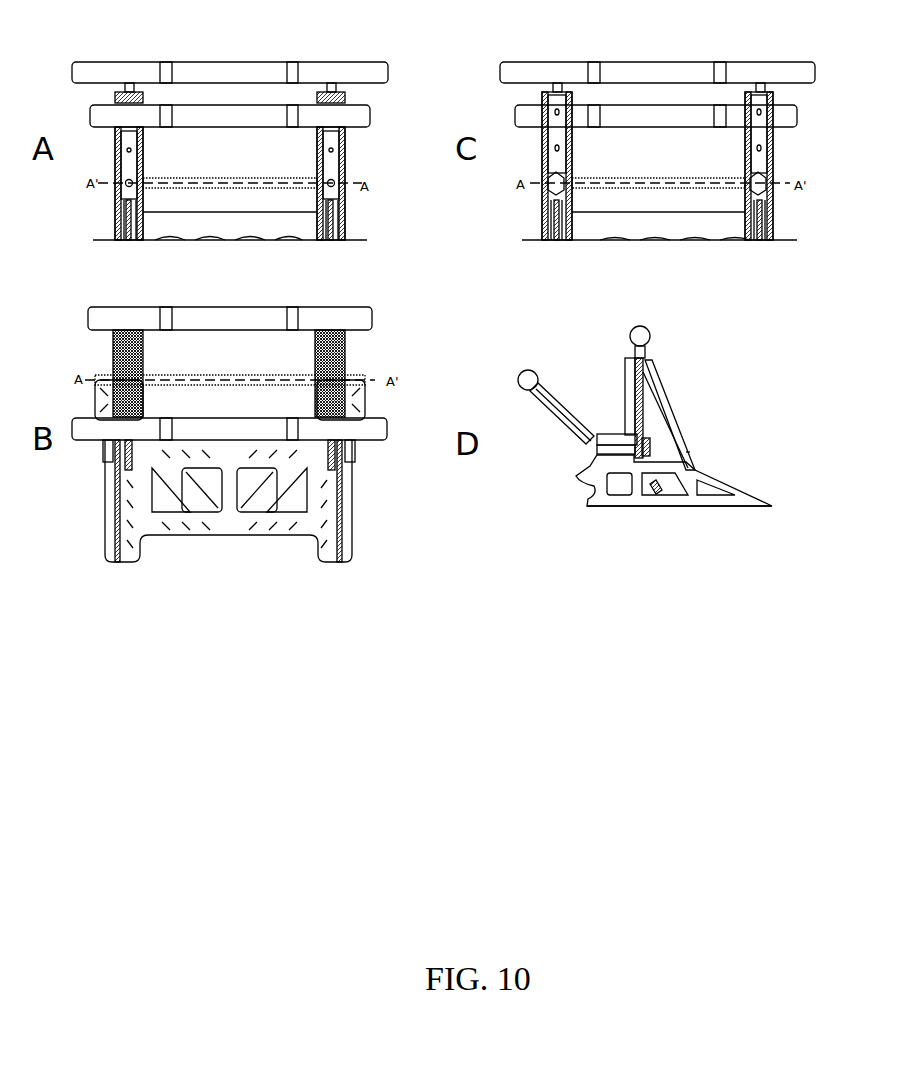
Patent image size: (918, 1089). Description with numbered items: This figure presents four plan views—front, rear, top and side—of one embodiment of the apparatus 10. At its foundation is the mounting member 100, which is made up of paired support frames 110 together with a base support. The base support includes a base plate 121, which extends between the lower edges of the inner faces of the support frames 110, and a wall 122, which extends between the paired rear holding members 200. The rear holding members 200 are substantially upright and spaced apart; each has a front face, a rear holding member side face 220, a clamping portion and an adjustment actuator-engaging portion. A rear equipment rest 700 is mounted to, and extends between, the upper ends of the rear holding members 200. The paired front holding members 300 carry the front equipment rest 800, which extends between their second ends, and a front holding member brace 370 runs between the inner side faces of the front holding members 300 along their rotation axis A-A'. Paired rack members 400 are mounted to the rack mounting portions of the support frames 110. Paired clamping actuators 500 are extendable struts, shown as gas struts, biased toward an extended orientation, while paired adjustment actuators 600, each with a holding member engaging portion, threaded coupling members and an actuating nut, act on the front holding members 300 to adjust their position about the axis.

The apparatus 10 is at (96, 54).
The rear equipment rest 700 is at (220, 72).
The front equipment rest 800 is at (185, 118).
The rear holding members 200 is at (100, 97).
The front holding members 300 is at (110, 155).
The front holding member brace 370 is at (250, 182).
The wall 122 is at (252, 228).
The clamping actuators 500 is at (120, 221).
The mounting member 100 is at (145, 247).
The base plate 121 is at (213, 242).
The rack members 400 is at (108, 402).
The adjustment actuators 600 is at (772, 178).
The rear holding member side faces 220 is at (688, 452).
The support frames 110 is at (637, 500).